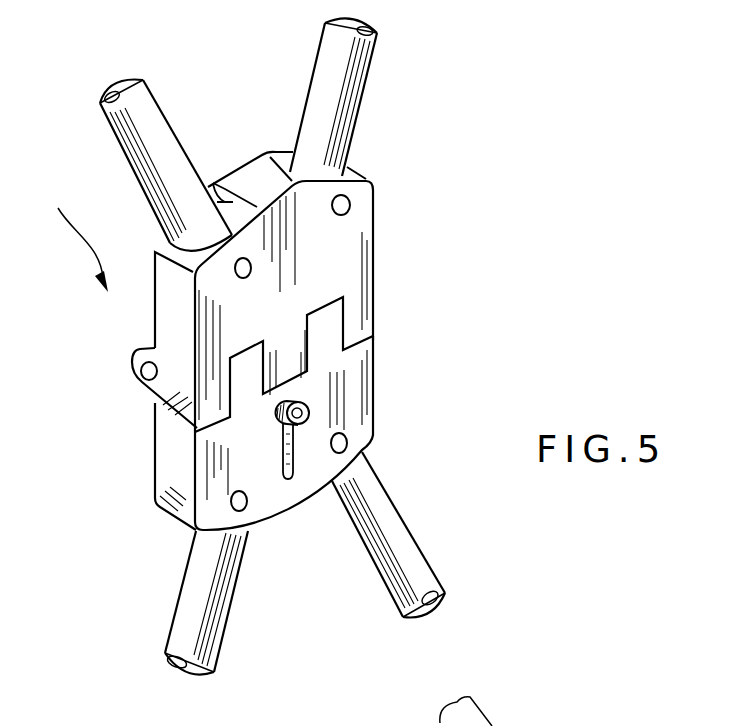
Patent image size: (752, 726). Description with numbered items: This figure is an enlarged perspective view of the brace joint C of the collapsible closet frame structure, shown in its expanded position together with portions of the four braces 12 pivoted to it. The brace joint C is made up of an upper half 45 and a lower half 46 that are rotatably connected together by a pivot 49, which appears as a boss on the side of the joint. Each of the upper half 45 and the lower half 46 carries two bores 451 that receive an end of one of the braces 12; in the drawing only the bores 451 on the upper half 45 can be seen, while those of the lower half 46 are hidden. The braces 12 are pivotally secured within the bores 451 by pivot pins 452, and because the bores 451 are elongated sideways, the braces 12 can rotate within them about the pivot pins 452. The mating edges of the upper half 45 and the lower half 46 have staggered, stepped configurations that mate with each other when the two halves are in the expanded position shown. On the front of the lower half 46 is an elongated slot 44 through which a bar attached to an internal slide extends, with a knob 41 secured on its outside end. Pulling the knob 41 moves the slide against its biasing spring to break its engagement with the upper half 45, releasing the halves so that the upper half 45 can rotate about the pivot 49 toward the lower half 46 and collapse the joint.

The braces 12 is at (126, 155).
The knob 41 is at (306, 397).
The elongated slot 44 is at (291, 480).
The upper half 45 is at (392, 254).
The bores 451 is at (207, 185).
The pivot pins 452 is at (351, 203).
The lower half 46 is at (392, 381).
The pivot 49 is at (142, 377).
The brace joint C is at (75, 235).